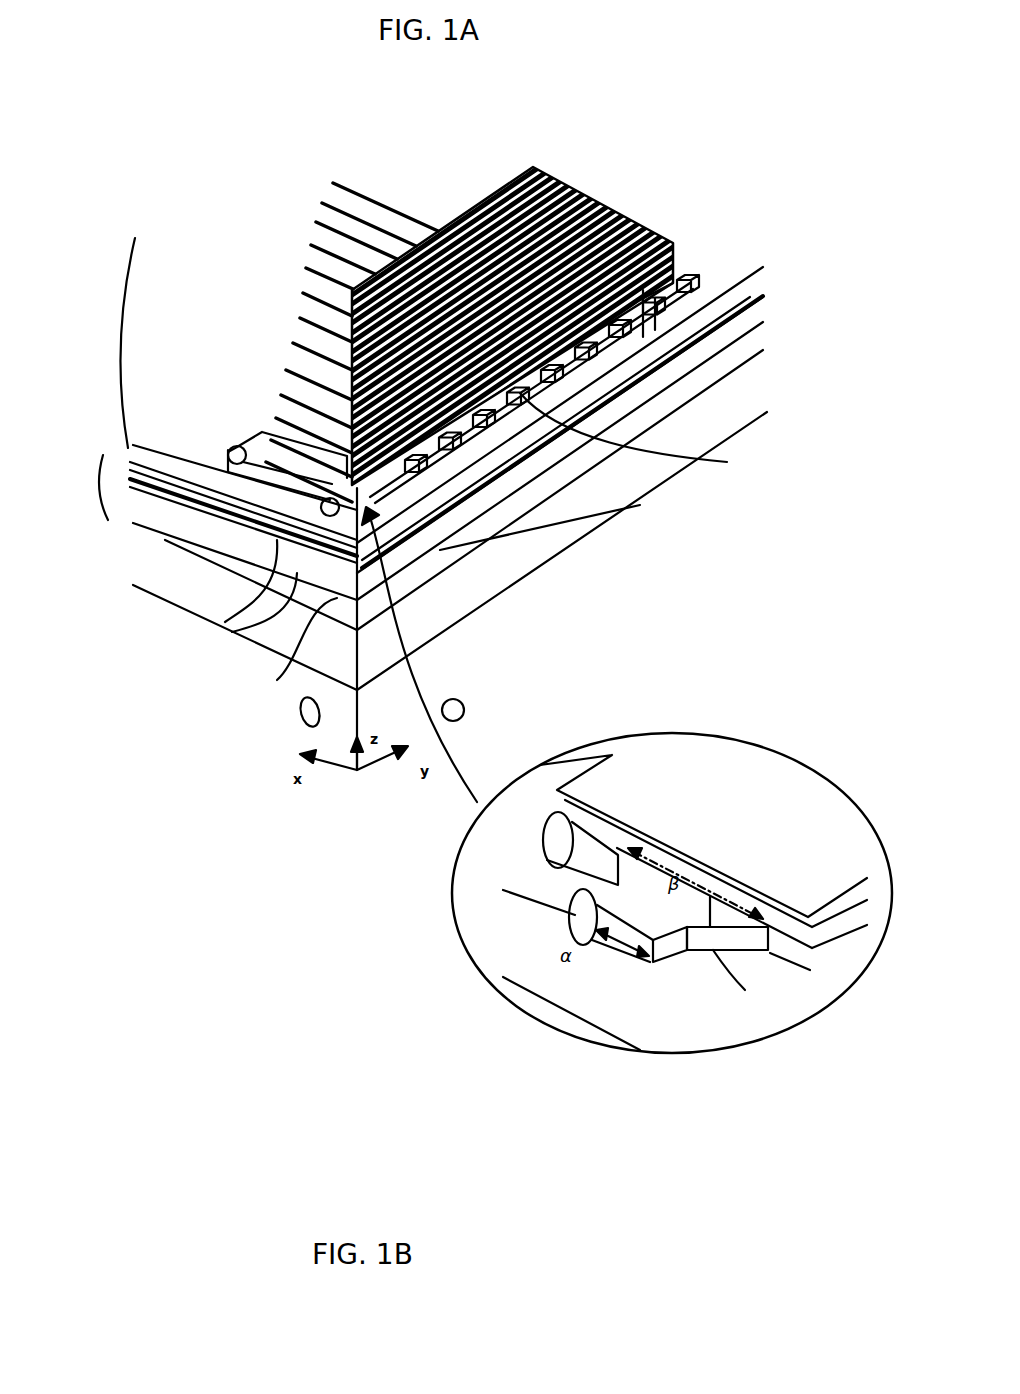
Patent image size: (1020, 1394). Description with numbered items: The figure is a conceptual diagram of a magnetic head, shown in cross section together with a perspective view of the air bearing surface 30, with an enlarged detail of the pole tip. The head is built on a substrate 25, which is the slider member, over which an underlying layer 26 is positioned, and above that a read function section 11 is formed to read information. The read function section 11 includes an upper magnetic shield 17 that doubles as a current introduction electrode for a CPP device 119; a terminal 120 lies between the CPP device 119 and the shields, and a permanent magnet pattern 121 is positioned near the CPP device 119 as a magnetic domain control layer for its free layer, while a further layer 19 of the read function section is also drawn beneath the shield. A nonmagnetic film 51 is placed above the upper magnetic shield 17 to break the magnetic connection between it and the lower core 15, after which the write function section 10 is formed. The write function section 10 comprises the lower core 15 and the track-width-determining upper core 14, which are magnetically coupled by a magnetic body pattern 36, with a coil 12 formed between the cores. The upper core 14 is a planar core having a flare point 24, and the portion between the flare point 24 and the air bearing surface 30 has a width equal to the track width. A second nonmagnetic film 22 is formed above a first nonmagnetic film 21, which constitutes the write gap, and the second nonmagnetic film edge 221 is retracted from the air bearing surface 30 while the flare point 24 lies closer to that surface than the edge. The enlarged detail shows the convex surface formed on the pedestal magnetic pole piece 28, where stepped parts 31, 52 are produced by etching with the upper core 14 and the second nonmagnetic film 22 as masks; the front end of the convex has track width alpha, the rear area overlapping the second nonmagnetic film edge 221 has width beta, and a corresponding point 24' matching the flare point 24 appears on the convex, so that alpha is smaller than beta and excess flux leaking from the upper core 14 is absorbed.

In FIG. 1A, the write function section 10 is at (106, 343).
In FIG. 1A, the read function section 11 is at (91, 487).
In FIG. 1A, the coil 12 is at (733, 464).
In FIG. 1A, the upper core 14 is at (465, 205).
In FIG. 1A, the lower core 15 is at (763, 270).
In FIG. 1A, the upper magnetic shield 17 is at (757, 315).
In FIG. 1A, the light guide plate 19 is at (753, 347).
In FIG. 1A, the first nonmagnetic film 21 is at (412, 490).
In FIG. 1B, the first nonmagnetic film 21 is at (835, 950).
In FIG. 1A, the second nonmagnetic film 22 is at (470, 480).
In FIG. 1B, the second nonmagnetic film 22 is at (843, 892).
In FIG. 1A, the flare point 24 is at (284, 415).
In FIG. 1B, the corresponding point 24' is at (687, 982).
In FIG. 1A, the substrate 25 is at (466, 708).
In FIG. 1A, the underlying layer 26 is at (747, 397).
In FIG. 1A, the pedestal magnetic pole piece 28 is at (200, 467).
In FIG. 1B, the pedestal magnetic pole piece 28 is at (550, 972).
In FIG. 1A, the air bearing surface 30 is at (300, 720).
In FIG. 1A, the stepped part 31 is at (250, 548).
In FIG. 1B, the stepped part 31 is at (583, 935).
In FIG. 1A, the magnetic body pattern 36 is at (687, 290).
In FIG. 1A, the nonmagnetic film 51 is at (763, 297).
In FIG. 1A, the stepped part 52 is at (233, 445).
In FIG. 1B, the stepped part 52 is at (545, 842).
In FIG. 1A, the CPP device 119 is at (357, 630).
In FIG. 1A, the terminal 120 is at (303, 568).
In FIG. 1A, the permanent magnet pattern 121 is at (203, 620).
In FIG. 1B, the second nonmagnetic film edge 221 is at (727, 952).